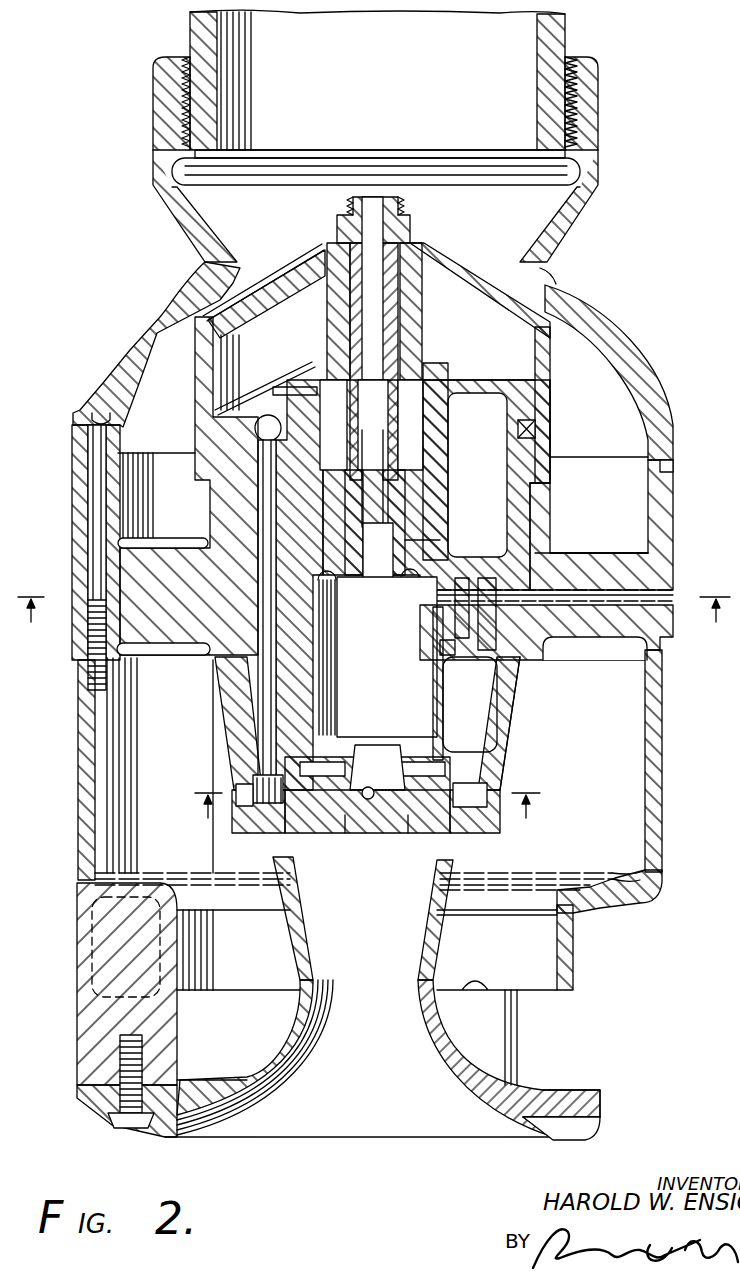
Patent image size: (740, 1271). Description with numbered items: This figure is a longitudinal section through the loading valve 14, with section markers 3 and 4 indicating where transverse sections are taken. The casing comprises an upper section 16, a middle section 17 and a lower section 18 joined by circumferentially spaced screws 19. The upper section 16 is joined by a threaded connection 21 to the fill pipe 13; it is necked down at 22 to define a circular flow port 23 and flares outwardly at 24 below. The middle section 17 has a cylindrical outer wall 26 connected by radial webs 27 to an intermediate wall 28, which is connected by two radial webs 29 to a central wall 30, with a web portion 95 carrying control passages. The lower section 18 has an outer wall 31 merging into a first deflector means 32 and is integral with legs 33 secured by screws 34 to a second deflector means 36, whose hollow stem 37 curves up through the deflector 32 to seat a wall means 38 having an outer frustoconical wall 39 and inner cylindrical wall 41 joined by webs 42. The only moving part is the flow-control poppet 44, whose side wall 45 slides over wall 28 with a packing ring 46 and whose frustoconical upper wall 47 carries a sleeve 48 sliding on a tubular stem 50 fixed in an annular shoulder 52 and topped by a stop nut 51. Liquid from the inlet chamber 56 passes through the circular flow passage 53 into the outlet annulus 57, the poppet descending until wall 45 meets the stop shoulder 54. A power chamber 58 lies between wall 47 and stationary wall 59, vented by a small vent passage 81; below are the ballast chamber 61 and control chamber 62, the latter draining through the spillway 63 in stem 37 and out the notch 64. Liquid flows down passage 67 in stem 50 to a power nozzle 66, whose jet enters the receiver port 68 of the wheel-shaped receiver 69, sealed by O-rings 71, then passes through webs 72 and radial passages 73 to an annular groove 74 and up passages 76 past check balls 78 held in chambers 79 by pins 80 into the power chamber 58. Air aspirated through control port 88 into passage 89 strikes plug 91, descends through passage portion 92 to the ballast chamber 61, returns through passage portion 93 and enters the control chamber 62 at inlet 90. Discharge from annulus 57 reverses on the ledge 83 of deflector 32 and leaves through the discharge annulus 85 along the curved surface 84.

The fill pipe 13 is at (565, 33).
The threaded connection 21 is at (580, 88).
The upper section 16 is at (592, 204).
The inlet chamber 56 is at (303, 217).
The adjustable stop nut 51 is at (406, 233).
The frustoconical upper wall 47 is at (447, 268).
The necked-down portion 22 is at (549, 277).
The flow port 23 is at (243, 278).
The circular flow passage 53 is at (216, 312).
The vent passage 81 is at (272, 342).
The tubular sleeve 48 is at (422, 312).
The valve body 14 is at (83, 344).
The tubular stem 50 is at (398, 350).
The power chamber 58 is at (516, 360).
The chambers 79 is at (258, 395).
The pins 80 is at (277, 386).
The flow-control poppet 44 is at (553, 373).
The flared portion 24 is at (652, 402).
The cylindrical side wall 45 is at (552, 396).
The stationary wall 59 is at (480, 398).
The packing ring 46 is at (535, 430).
The balls 78 is at (282, 432).
The passage 67 is at (384, 439).
The ballast chamber 61 is at (488, 474).
The outlet chamber 57 is at (614, 484).
The cylindrical outer wall 26 is at (674, 466).
The screws 19 is at (97, 511).
The passages 76 is at (258, 513).
The cylindrical central wall 30 is at (448, 500).
The cylindrical intermediate wall 28 is at (528, 505).
The middle section 17 is at (677, 504).
The power nozzle 66 is at (373, 512).
The annular shoulder portion 52 is at (410, 545).
The plug 91 is at (465, 580).
The stop shoulder 54 is at (536, 553).
The passage 89 is at (608, 592).
The control port 88 is at (650, 598).
The radial webs 29 is at (243, 597).
The inlet 90 is at (381, 611).
The control chamber 62 is at (374, 667).
The passage portion 93 is at (440, 648).
The passage portion 92 is at (490, 630).
The web portion 95 is at (612, 646).
The section line 3- 3 is at (374, 629).
The radial webs 27 is at (165, 652).
The radial webs 42 is at (240, 688).
The outer frustoconical wall 39 is at (512, 684).
The inner wall 41 is at (443, 726).
The wall means 38 is at (522, 731).
The cylindrical outer wall 31 is at (663, 727).
The receiver port 68 is at (372, 748).
The O-rings 71 is at (442, 774).
The annular groove 74 is at (238, 790).
The lower section 18 is at (664, 800).
The section line 4- 4 is at (365, 823).
The ledge portion 83 is at (170, 862).
The radial passage 73 is at (346, 816).
The receiver element 69 is at (370, 802).
The web elements 72 is at (408, 818).
The spillway 63 is at (385, 934).
The discharge annulus 85 is at (278, 957).
The hollow stem 37 is at (436, 948).
The deflector means 32 is at (582, 908).
The legs 33 is at (177, 1022).
The upper surface 84 is at (272, 1072).
The additional deflector means 36 is at (546, 1091).
The screws 34 is at (120, 1068).
The outlet 64 is at (600, 1126).